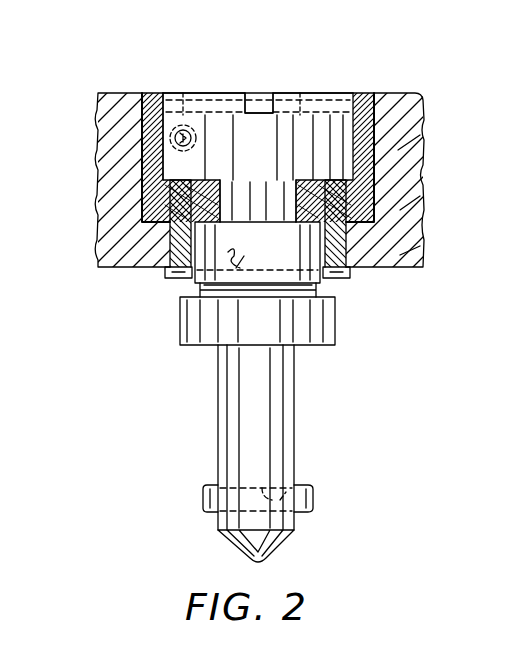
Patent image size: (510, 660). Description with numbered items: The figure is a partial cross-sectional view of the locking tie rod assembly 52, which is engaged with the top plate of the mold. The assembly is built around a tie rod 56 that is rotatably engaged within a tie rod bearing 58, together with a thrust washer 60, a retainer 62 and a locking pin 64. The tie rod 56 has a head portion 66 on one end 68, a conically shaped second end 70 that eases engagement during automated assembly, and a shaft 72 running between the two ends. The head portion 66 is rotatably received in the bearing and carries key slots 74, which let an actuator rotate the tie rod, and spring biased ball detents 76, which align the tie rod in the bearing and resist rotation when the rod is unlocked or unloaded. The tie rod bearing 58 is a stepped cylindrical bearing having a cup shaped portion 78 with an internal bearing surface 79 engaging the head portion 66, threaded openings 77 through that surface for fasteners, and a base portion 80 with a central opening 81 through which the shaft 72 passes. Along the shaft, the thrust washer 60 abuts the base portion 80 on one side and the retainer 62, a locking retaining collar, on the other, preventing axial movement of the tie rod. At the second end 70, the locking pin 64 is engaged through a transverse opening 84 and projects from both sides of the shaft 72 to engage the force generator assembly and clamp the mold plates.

The locking tie rod assembly 52 is at (395, 72).
The tie rod 56 is at (287, 92).
The tie rod bearing 58 is at (402, 148).
The thrust washer 60 is at (318, 292).
The retainer 62 is at (336, 322).
The locking pin 64 is at (314, 503).
The head portion 66 is at (165, 92).
The one end 68 is at (165, 90).
The second end 70 is at (232, 552).
The shaft 72 is at (246, 378).
The key slots 74 is at (258, 92).
The spring biased ball detents 76 is at (176, 138).
The threaded openings 77 is at (404, 252).
The cup shaped portion 78 is at (405, 205).
The internal bearing surface 79 is at (176, 148).
The base portion 80 is at (246, 278).
The central opening 81 is at (168, 245).
The opening 84 is at (305, 490).